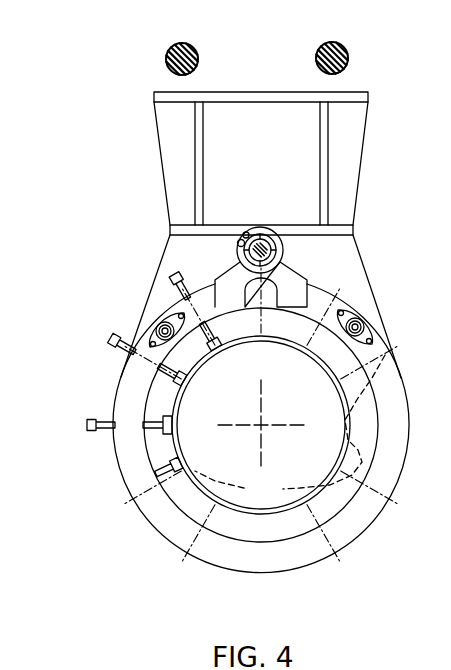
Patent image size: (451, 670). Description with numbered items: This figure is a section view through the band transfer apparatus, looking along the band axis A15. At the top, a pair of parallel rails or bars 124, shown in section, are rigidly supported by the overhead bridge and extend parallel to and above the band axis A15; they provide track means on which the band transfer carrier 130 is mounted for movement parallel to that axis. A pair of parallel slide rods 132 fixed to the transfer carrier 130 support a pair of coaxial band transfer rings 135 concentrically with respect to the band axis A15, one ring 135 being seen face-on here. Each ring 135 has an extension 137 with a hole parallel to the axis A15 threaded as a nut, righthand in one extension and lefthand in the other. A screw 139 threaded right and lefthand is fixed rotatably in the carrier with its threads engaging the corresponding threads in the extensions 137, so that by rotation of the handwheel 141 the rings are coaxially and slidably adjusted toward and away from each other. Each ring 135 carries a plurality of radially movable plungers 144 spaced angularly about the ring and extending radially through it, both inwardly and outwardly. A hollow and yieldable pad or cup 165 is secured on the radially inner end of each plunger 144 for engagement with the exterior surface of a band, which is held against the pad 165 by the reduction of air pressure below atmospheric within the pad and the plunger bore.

The parallel rails or bars 124 is at (320, 50).
The band transfer carrier 130 is at (165, 250).
The slide rods 132 is at (160, 326).
The band transfer ring 135 is at (360, 522).
The extension 137 is at (222, 280).
The screw 139 is at (242, 238).
The handwheel 141 is at (276, 231).
The plungers 144 is at (135, 452).
The pad or cup 165 is at (162, 385).
The band axis A15 is at (261, 425).